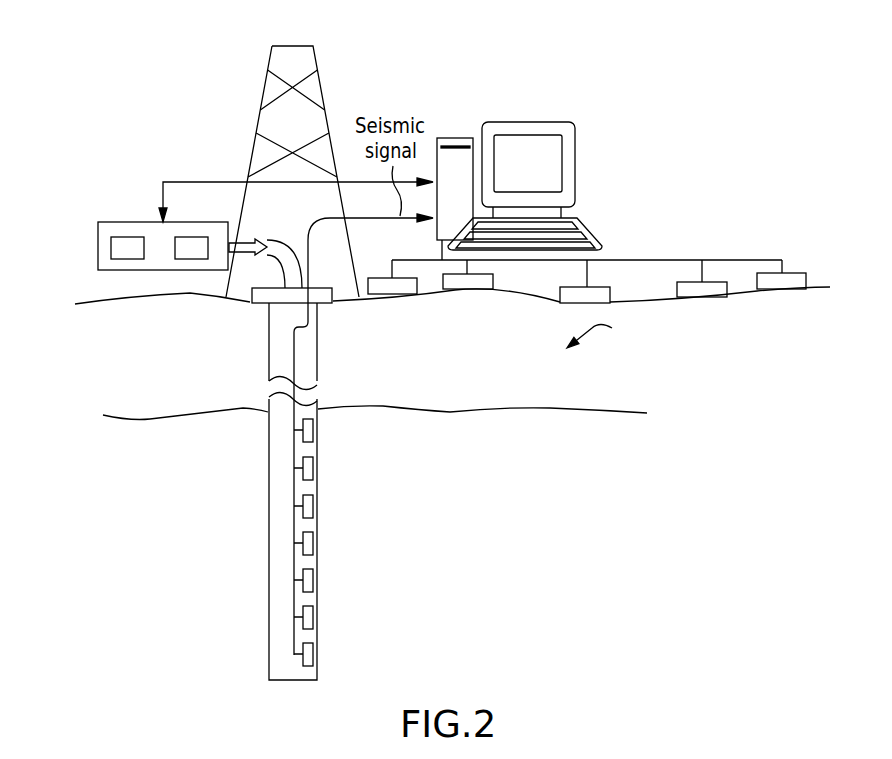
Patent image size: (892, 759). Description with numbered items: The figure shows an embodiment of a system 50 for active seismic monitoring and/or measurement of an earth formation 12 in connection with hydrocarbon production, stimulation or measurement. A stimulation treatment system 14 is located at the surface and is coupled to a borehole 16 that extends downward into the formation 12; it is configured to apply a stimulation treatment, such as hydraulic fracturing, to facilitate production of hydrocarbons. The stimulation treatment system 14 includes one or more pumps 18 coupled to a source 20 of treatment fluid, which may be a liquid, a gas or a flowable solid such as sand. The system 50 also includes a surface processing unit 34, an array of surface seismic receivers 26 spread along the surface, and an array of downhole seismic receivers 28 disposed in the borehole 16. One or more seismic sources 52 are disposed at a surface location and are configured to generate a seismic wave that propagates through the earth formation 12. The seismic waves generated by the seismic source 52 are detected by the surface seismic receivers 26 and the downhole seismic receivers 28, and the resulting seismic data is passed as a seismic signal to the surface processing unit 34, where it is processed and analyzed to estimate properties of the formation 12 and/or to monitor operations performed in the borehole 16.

The system for active seismic monitoring and/or measurement 50 is at (203, 114).
The stimulation treatment system 14 is at (178, 248).
The source of treatment fluid 20 is at (136, 243).
The pump 18 is at (190, 259).
The surface processing unit 34 is at (456, 138).
The surface seismic receivers 26 is at (473, 288).
The seismic source 52 is at (571, 296).
The earth formation 12 is at (452, 487).
The borehole 16 is at (280, 489).
The downhole seismic receivers 28 is at (309, 581).